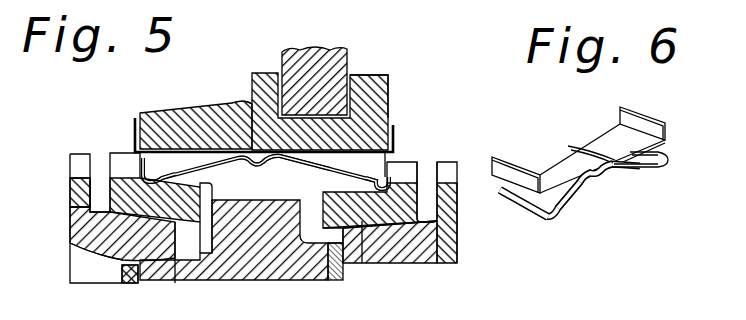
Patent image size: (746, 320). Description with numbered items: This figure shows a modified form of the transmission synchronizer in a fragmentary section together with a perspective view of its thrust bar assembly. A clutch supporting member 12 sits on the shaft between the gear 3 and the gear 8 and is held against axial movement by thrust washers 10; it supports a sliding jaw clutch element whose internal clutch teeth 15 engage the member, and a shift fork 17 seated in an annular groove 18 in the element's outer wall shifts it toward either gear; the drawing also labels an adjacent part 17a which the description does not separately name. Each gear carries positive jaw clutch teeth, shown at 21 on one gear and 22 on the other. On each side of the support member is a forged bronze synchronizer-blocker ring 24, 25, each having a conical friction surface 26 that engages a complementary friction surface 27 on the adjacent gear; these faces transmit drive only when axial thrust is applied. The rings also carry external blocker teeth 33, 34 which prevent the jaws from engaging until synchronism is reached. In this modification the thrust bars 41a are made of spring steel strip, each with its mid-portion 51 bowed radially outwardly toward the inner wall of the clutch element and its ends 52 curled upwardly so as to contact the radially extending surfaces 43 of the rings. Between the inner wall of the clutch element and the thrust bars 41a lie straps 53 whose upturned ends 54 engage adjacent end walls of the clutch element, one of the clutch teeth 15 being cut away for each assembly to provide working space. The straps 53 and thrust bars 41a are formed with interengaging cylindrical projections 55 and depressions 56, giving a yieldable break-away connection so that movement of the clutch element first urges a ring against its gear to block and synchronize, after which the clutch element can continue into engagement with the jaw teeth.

In FIG. 5, the gear 3 is at (70, 247).
In FIG. 5, the gear 8 is at (447, 248).
In FIG. 5, the thrust washers 10 is at (128, 283).
In FIG. 5, the clutch supporting member 12 is at (265, 262).
In FIG. 5, the clutch teeth 15 is at (302, 167).
In FIG. 5, the shift fork 17 is at (345, 52).
In FIG. 5, the insulating part 17a is at (420, 61).
In FIG. 5, the annular groove 18 is at (288, 80).
In FIG. 5, the positive jaw clutch teeth 21 is at (78, 155).
In FIG. 5, the positive jaw clutch teeth 22 is at (447, 170).
In FIG. 5, the synchronizer-blocker ring 24 is at (90, 202).
In FIG. 5, the synchronizer-blocker ring 25 is at (378, 212).
In FIG. 5, the conical friction surface 26 is at (107, 252).
In FIG. 5, the friction surface 27 is at (190, 252).
In FIG. 5, the blocker teeth 33 is at (118, 153).
In FIG. 5, the blocker teeth 34 is at (410, 158).
In FIG. 5, the thrust bars 41a is at (335, 157).
In FIG. 6, the thrust bars 41a is at (568, 202).
In FIG. 5, the radially extending surfaces 43 is at (110, 191).
In FIG. 5, the mid-portion 51 is at (318, 185).
In FIG. 6, the mid-portion 51 is at (592, 188).
In FIG. 5, the ends 52 is at (158, 171).
In FIG. 6, the ends 52 is at (670, 159).
In FIG. 5, the straps 53 is at (167, 147).
In FIG. 6, the straps 53 is at (592, 137).
In FIG. 5, the upturned ends 54 is at (133, 125).
In FIG. 6, the upturned ends 54 is at (698, 109).
In FIG. 5, the cylindrical projections 55 is at (245, 103).
In FIG. 6, the cylindrical projections 55 is at (582, 152).
In FIG. 5, the depressions 56 is at (267, 163).
In FIG. 6, the depressions 56 is at (608, 168).